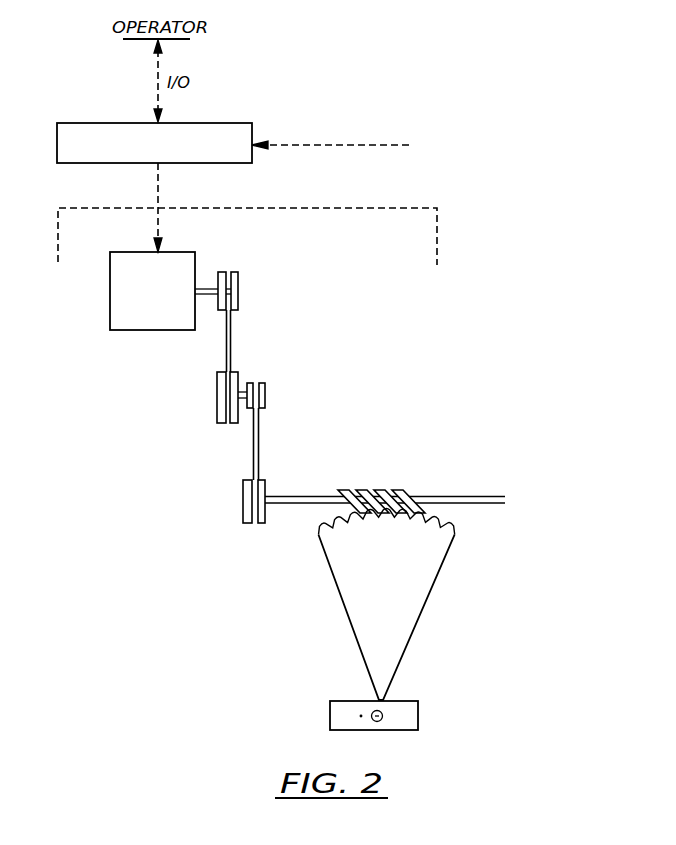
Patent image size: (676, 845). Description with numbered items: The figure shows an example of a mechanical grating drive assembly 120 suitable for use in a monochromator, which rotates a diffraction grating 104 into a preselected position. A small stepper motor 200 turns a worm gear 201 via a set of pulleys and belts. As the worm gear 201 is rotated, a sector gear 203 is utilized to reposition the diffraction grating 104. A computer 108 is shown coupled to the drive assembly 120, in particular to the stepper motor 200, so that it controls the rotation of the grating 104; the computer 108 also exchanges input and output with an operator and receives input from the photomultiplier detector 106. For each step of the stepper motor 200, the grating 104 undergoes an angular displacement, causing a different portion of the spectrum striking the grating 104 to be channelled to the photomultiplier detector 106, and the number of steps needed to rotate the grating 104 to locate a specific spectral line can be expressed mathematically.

The computer 108 is at (154, 143).
The photomultiplier detector 106 is at (393, 144).
The drive assembly 120 is at (247, 236).
The stepper motor 200 is at (110, 318).
The worm gear 201 is at (383, 490).
The sector gear 203 is at (422, 615).
The diffraction grating 104 is at (330, 719).